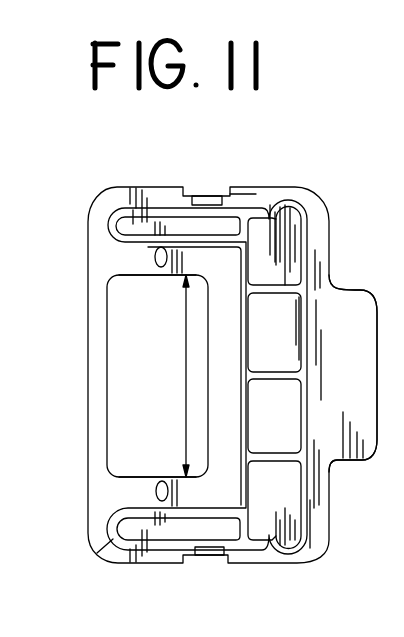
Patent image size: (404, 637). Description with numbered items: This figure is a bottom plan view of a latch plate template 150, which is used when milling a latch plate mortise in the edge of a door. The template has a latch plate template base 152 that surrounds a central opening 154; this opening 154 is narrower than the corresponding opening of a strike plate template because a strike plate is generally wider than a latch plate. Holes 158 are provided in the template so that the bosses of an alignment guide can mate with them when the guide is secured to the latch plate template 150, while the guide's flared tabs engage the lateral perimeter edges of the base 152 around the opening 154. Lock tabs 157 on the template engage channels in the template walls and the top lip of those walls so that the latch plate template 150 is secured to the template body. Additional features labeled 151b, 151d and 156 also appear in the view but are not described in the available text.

The latch plate template 150 is at (87, 621).
The upper cavity wall 151b is at (145, 278).
The lower cavity wall 151d is at (138, 475).
The latch plate template base 152 is at (312, 205).
The opening 154 is at (165, 379).
The side protrusion 156 is at (375, 430).
The lock tabs 157 is at (205, 198).
The holes 158 is at (154, 259).